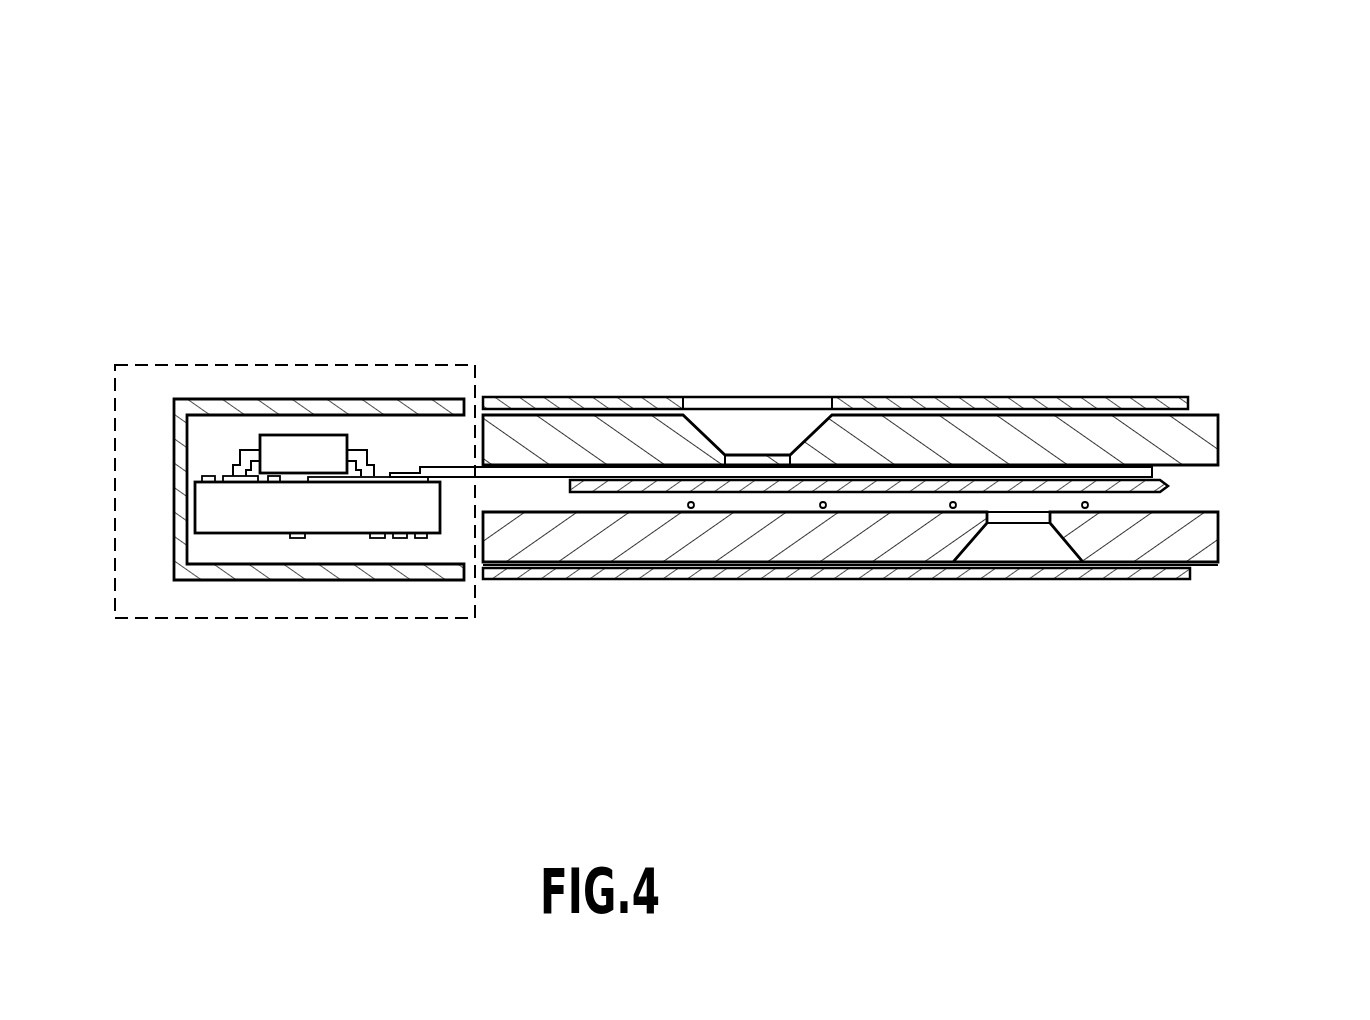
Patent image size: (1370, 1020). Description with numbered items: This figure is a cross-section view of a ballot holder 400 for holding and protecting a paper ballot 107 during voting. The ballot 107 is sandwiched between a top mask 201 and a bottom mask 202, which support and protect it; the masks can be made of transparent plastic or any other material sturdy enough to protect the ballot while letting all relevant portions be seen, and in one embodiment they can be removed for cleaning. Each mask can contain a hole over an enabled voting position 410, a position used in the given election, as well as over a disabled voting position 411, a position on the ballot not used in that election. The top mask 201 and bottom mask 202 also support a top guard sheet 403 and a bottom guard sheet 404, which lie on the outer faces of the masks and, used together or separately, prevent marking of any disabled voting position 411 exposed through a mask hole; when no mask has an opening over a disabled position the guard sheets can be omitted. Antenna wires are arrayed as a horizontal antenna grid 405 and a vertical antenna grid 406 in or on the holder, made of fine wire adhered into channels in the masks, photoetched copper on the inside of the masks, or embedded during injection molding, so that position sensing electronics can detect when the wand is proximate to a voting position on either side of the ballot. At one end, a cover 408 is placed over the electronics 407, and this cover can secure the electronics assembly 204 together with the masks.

The display module assembly 400 is at (281, 143).
The electronics assembly 204 is at (167, 365).
The cover 408 is at (212, 578).
The electronics 407 is at (298, 538).
The horizontal antenna grid 405 is at (553, 470).
The top guard sheet 403 is at (1000, 397).
The enabled voting position 410 is at (763, 397).
The top mask 201 is at (1068, 414).
The ballot 107 is at (1165, 488).
The vertical antenna grid 406 is at (953, 508).
The bottom mask 202 is at (625, 540).
The disabled voting position 411 is at (1030, 563).
The bottom guard sheet 404 is at (570, 573).